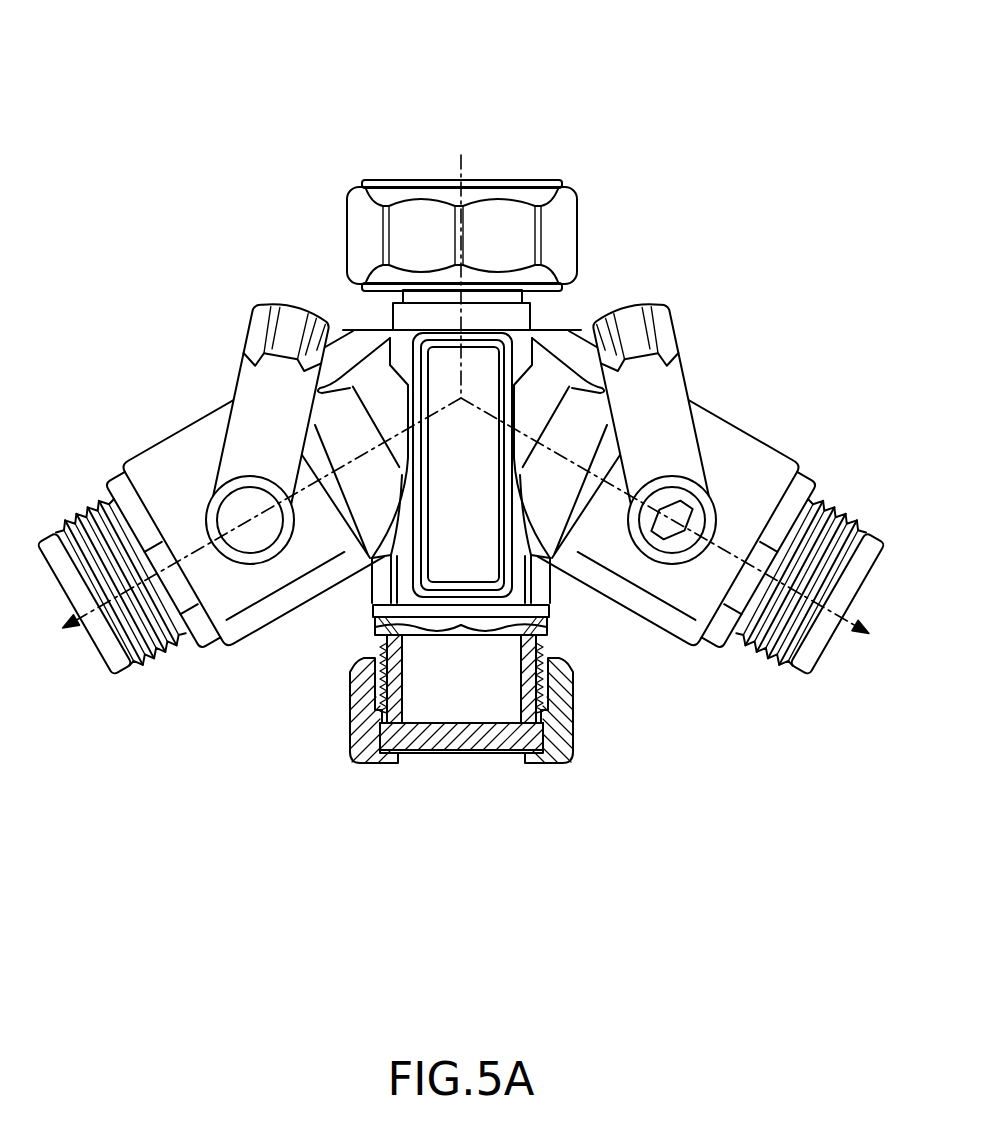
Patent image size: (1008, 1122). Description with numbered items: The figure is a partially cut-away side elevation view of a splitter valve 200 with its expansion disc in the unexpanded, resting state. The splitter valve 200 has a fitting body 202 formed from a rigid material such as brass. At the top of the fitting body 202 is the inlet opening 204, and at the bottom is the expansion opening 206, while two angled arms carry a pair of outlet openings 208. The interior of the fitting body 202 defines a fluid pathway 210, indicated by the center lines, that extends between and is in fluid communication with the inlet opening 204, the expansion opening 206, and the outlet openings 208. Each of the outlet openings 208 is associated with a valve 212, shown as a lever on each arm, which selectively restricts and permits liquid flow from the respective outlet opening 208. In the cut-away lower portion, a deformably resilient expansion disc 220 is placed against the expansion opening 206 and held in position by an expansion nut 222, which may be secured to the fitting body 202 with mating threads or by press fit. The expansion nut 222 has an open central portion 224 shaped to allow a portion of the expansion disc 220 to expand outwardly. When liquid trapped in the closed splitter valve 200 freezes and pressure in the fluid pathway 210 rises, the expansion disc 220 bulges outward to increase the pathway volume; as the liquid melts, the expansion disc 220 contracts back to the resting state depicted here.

The splitter valve 200 is at (214, 128).
The fitting body 202 is at (717, 437).
The inlet opening 204 is at (392, 180).
The expansion opening 206 is at (505, 707).
The outlet openings 208 is at (71, 651).
The fluid pathway 210 is at (467, 172).
The valve 212 is at (207, 503).
The expansion disc 220 is at (490, 735).
The expansion nut 222 is at (562, 728).
The open central portion 224 is at (423, 763).